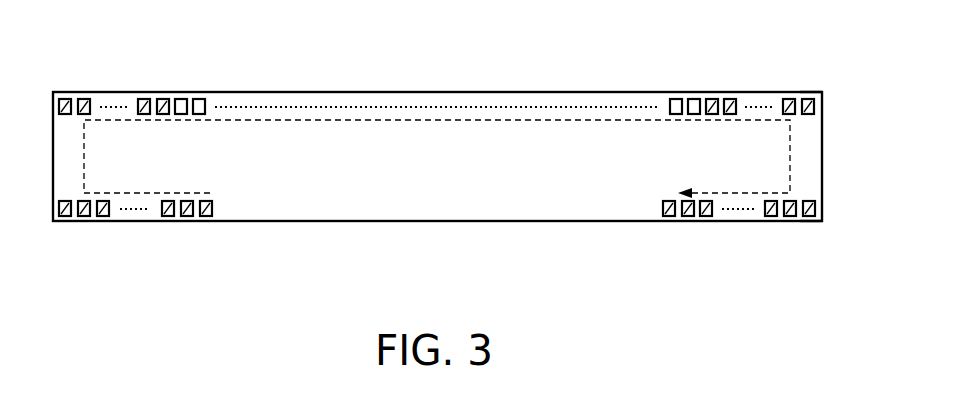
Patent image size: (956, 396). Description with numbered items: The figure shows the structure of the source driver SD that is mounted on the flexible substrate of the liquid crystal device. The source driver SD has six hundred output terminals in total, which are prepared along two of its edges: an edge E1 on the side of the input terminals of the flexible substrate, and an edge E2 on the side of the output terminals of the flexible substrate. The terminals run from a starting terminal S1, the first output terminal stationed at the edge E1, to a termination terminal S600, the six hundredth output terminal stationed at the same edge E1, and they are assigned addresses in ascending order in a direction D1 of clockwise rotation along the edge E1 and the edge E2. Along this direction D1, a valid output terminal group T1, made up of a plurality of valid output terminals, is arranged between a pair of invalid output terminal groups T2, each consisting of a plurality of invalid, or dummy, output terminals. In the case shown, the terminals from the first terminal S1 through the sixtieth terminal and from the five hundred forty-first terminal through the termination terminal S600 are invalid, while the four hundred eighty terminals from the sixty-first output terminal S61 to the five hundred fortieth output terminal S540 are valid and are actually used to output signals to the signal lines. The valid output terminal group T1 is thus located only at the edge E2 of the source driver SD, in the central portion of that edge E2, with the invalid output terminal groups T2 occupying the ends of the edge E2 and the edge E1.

The source driver SD is at (414, 231).
The valid output terminal group T1 is at (701, 70).
The invalid output terminal groups T2 is at (53, 70).
The direction D1 is at (288, 122).
The 61th output terminal S61 is at (182, 100).
The 540th output terminal S540 is at (692, 100).
The starting terminal S1 is at (204, 216).
The termination terminal S600 is at (670, 216).
The edge of the source driver E1 is at (800, 221).
The edge of the source driver E2 is at (798, 92).